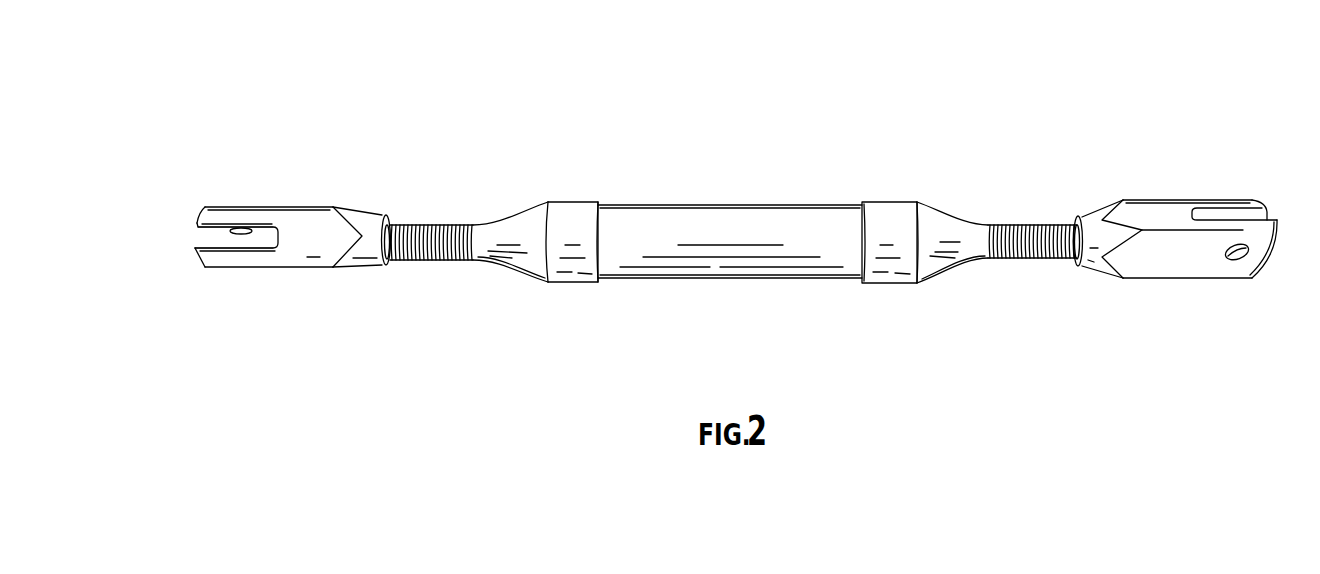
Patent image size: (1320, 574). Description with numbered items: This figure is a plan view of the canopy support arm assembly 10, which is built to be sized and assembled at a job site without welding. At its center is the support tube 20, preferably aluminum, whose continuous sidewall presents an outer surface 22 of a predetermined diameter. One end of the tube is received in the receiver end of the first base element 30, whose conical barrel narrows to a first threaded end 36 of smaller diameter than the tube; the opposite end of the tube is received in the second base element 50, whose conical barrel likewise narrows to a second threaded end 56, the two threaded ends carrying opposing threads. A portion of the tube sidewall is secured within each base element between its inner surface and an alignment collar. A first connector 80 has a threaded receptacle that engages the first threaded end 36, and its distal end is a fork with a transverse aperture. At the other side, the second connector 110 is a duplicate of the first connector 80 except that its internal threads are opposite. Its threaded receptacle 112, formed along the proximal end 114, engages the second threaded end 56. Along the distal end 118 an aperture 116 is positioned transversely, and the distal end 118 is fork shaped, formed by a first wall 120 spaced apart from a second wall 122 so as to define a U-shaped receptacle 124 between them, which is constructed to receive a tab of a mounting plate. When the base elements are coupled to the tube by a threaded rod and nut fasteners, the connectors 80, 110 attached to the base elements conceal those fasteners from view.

The canopy support arm assembly 10 is at (1012, 122).
The support tube 20 is at (764, 171).
The outer surface 22 is at (751, 292).
The first base element 30 is at (941, 199).
The first threaded end 36 is at (1028, 218).
The second base element 50 is at (535, 189).
The second threaded end 56 is at (418, 260).
The first connector 80 is at (1183, 200).
The second connector 110 is at (292, 204).
The threaded receptacle 112 is at (418, 225).
The proximal end 114 is at (356, 201).
The aperture 116 is at (270, 277).
The distal end 118 is at (218, 205).
The first wall 120 is at (198, 222).
The second wall 122 is at (205, 275).
The U-shaped receptacle 124 is at (190, 240).